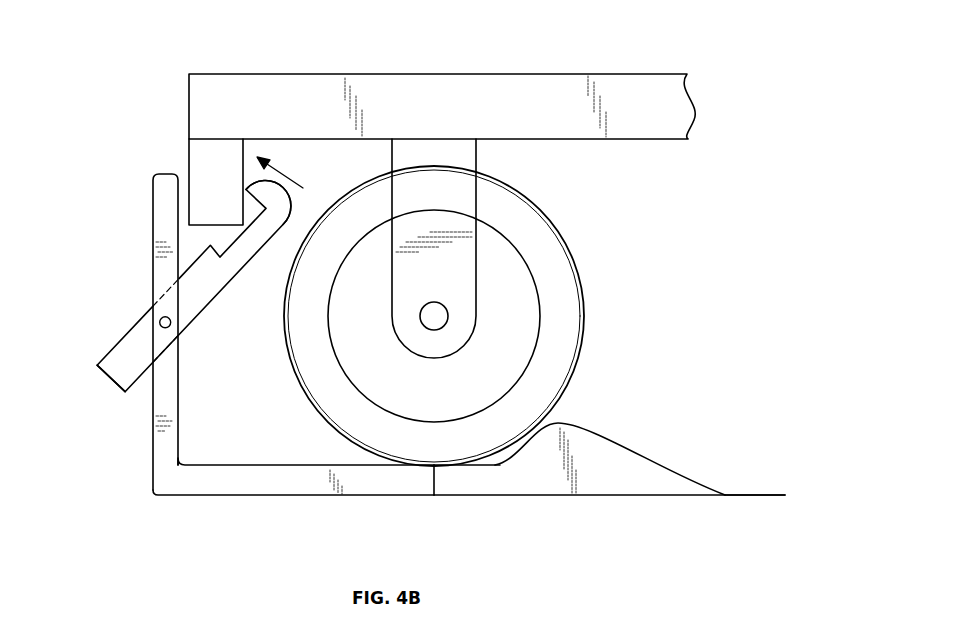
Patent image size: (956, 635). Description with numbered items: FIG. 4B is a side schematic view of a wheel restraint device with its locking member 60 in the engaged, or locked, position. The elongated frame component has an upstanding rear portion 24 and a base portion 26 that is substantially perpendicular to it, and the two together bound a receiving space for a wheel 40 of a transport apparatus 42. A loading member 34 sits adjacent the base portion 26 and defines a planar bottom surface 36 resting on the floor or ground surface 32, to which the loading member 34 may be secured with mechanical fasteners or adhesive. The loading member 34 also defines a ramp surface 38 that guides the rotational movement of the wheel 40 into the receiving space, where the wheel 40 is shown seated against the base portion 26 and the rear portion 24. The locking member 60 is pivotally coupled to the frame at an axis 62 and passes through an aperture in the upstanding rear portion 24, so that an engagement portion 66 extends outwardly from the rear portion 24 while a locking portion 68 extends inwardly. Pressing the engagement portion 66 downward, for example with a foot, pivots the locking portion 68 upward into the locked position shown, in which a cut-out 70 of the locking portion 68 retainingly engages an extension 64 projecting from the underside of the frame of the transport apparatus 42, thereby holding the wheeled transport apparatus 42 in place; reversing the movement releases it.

The upstanding rear portion 24 is at (157, 205).
The base portion 26 is at (252, 483).
The floor or ground surface 32 is at (768, 496).
The loading member 34 is at (618, 485).
The planar bottom surface 36 is at (500, 497).
The ramp surface 38 is at (635, 457).
The wheel 40 is at (543, 255).
The transport apparatus 42 is at (290, 93).
The locking member 60 is at (203, 332).
The axis 62 is at (163, 307).
The extension 64 is at (215, 188).
The engagement portion 66 is at (143, 413).
The locking portion 68 is at (287, 195).
The cut-out 70 is at (242, 243).